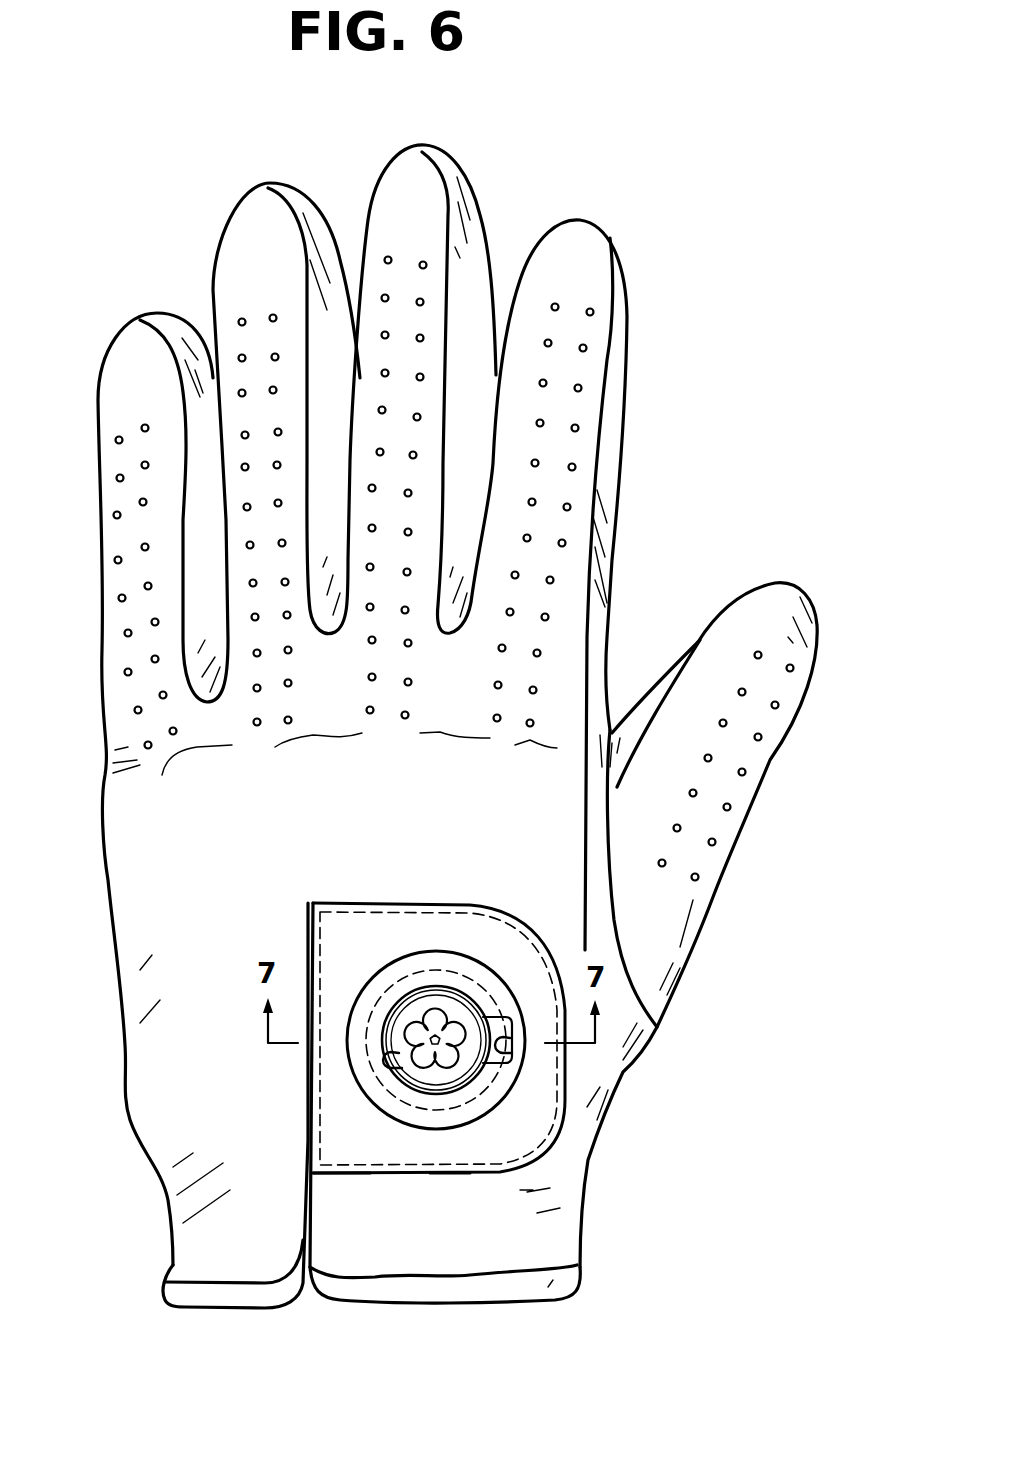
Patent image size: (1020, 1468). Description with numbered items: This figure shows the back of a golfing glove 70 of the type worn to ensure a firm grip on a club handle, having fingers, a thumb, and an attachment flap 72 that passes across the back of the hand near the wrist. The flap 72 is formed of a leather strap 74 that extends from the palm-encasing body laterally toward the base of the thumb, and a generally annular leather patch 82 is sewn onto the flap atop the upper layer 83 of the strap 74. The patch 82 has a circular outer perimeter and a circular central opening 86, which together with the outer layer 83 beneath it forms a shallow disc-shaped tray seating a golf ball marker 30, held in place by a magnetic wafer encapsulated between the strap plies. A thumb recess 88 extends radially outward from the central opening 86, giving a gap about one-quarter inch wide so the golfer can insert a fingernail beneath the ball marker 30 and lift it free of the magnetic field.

The golfing glove 70 is at (668, 457).
The attachment flap 72 is at (362, 937).
The ball marker 30 is at (440, 1003).
The leather strap 74 is at (517, 1132).
The central opening 86 is at (400, 1068).
The thumb recess 88 is at (513, 1054).
The leather patch 82 is at (443, 1118).
The upper layer 83 is at (350, 1147).